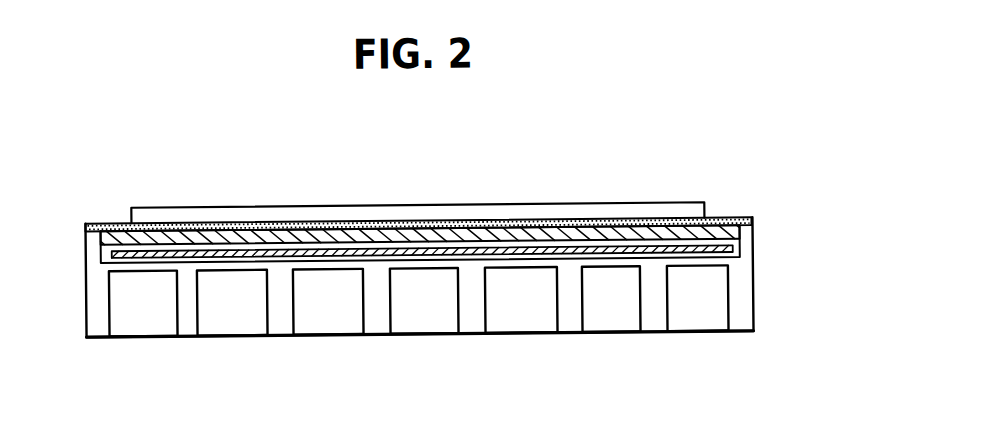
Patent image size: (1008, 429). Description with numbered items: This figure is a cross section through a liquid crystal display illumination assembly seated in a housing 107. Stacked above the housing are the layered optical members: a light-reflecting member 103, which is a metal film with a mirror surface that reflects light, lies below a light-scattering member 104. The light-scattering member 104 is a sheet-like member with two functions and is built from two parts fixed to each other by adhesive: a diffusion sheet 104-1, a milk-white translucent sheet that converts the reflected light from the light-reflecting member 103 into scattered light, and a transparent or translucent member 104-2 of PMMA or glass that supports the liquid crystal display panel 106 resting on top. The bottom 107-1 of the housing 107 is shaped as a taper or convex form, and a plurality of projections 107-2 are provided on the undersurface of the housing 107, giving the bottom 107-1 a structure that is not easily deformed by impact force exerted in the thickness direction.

The light-reflecting member 103 is at (722, 252).
The light-scattering member 104 is at (496, 212).
The diffusion sheet 104-1 is at (738, 218).
The transparent or translucent member 104-2 is at (753, 238).
The liquid crystal display panel 106 is at (673, 204).
The housing 107 is at (753, 306).
The bottom of the housing 107-1 is at (523, 301).
The projections 107-2 is at (392, 318).